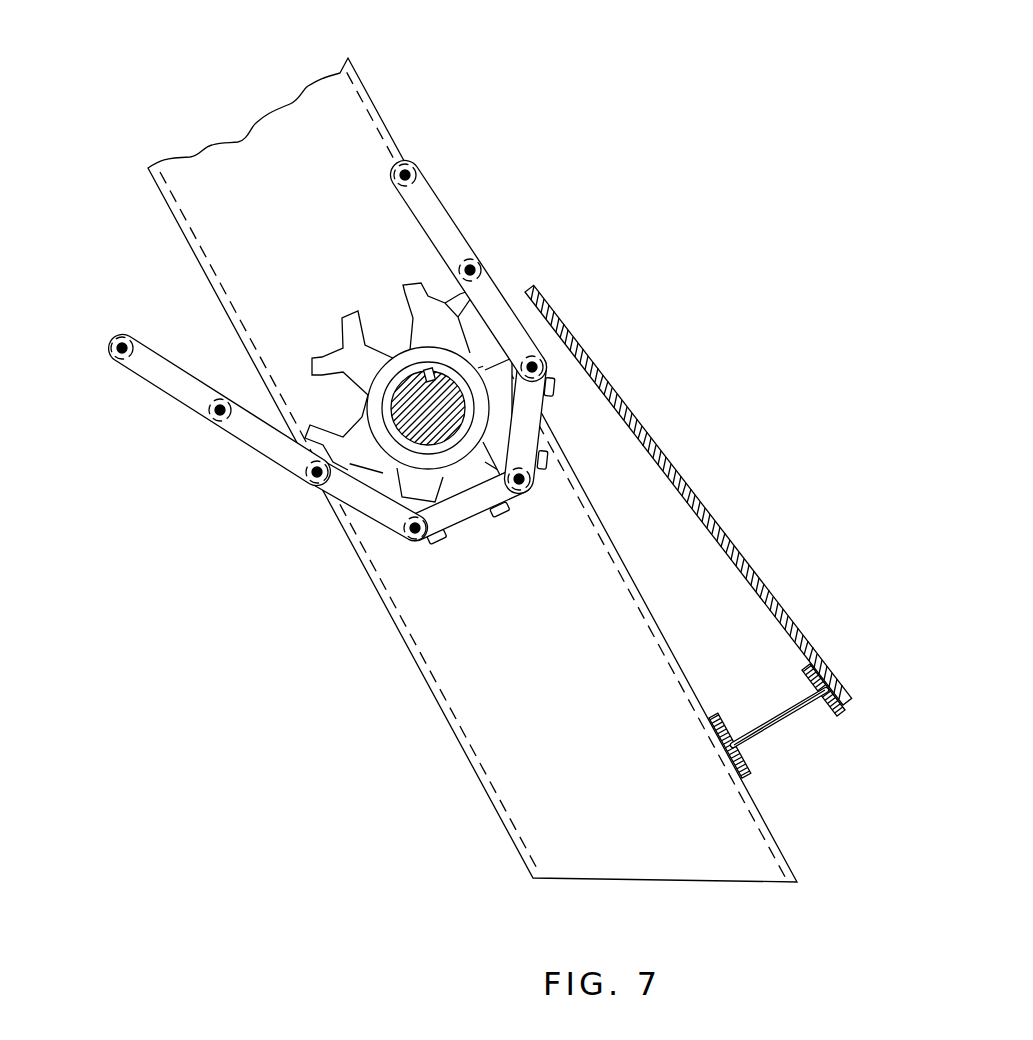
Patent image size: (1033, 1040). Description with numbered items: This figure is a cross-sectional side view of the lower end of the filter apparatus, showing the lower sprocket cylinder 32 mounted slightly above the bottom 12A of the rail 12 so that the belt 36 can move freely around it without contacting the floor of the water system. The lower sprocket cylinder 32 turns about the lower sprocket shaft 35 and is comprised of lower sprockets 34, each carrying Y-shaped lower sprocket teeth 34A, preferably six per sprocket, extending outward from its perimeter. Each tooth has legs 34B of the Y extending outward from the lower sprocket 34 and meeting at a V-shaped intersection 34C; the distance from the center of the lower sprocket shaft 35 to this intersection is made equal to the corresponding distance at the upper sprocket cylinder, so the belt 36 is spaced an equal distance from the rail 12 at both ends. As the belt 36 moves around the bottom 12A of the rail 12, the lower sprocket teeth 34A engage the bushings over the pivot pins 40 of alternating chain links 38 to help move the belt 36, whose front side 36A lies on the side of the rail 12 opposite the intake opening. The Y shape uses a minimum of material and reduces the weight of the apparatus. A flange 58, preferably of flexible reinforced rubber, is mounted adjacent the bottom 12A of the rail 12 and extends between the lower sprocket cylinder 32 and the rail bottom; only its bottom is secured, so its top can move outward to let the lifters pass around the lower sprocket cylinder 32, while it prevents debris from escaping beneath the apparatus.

The rail 12 is at (500, 693).
The bottom of the rail 12A is at (538, 785).
The lower sprocket cylinder 32 is at (388, 455).
The lower sprocket 34 is at (412, 492).
The lower sprocket teeth 34A is at (323, 368).
The legs of the Y 34B is at (420, 288).
The V-shaped intersection of legs 34C is at (340, 343).
The lower sprocket shaft 35 is at (440, 418).
The belt 36 is at (185, 393).
The front side of the belt 36A is at (447, 212).
The chain links 38 is at (423, 192).
The pivot pins 40 is at (527, 480).
The flange 58 is at (727, 537).